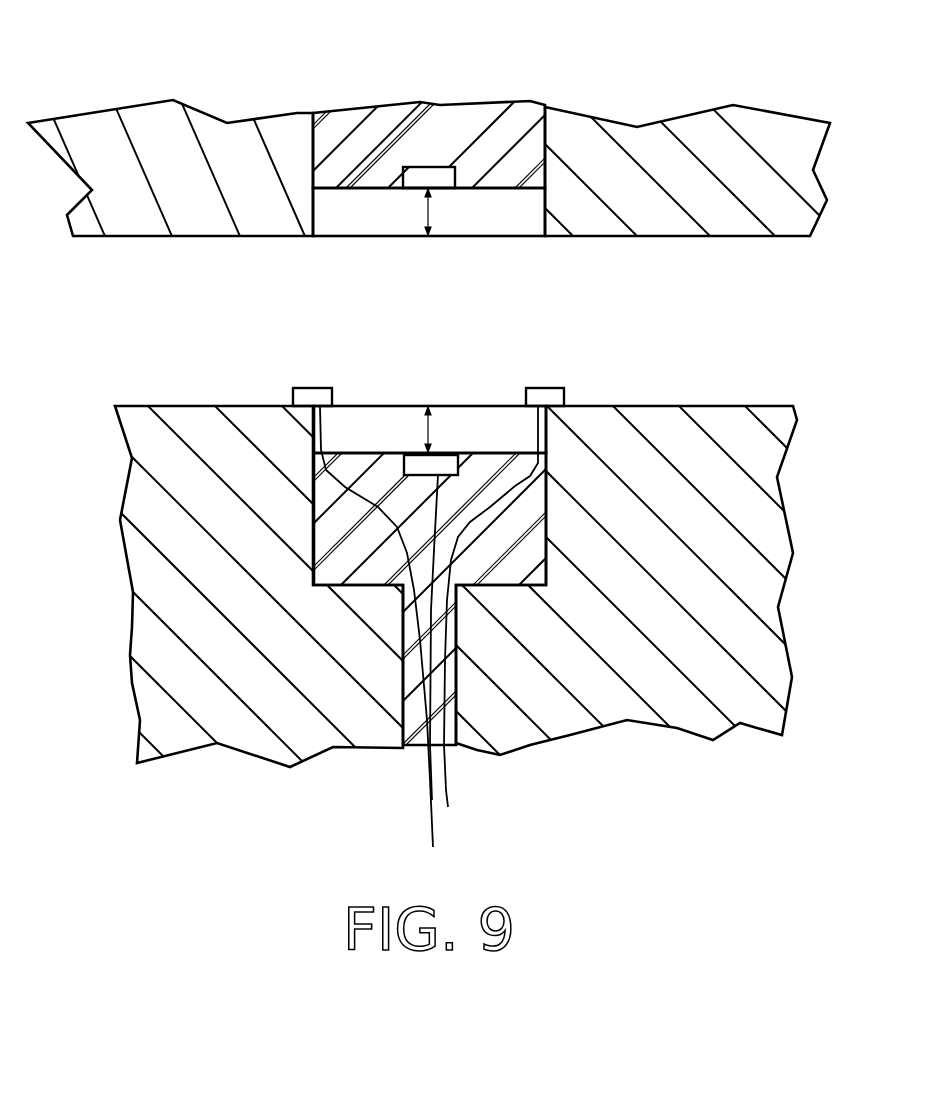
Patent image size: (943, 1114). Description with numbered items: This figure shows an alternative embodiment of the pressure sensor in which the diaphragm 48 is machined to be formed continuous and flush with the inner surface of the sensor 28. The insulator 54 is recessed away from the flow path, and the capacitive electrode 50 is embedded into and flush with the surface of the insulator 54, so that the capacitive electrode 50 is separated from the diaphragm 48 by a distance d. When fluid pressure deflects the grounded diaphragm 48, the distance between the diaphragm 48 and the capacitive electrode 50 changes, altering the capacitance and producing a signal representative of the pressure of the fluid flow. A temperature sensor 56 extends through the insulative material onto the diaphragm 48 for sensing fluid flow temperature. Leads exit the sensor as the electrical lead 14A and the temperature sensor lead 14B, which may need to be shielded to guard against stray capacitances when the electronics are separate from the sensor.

The sensor 28 is at (683, 100).
The diaphragm 48 is at (345, 237).
The capacitive electrode 50 is at (418, 175).
The insulator 54 is at (463, 127).
The temperature sensor 56 is at (545, 388).
The electrical lead 14A is at (427, 778).
The temperature sensor lead 14B is at (448, 788).